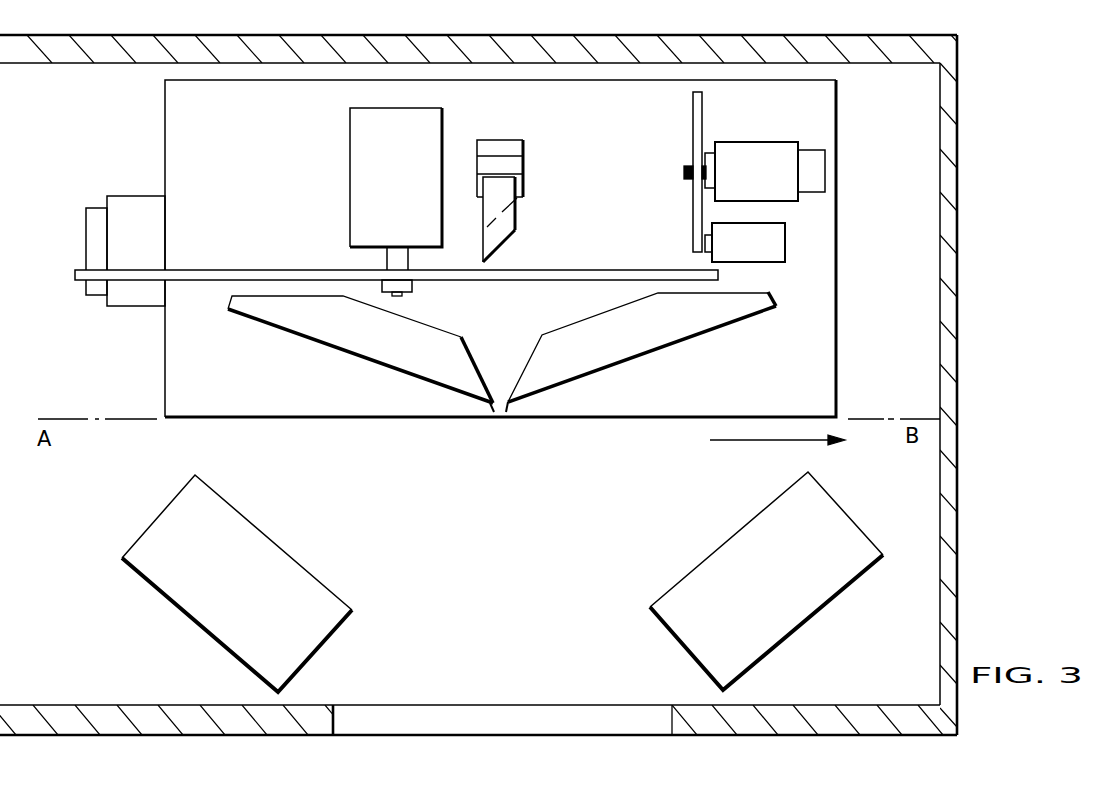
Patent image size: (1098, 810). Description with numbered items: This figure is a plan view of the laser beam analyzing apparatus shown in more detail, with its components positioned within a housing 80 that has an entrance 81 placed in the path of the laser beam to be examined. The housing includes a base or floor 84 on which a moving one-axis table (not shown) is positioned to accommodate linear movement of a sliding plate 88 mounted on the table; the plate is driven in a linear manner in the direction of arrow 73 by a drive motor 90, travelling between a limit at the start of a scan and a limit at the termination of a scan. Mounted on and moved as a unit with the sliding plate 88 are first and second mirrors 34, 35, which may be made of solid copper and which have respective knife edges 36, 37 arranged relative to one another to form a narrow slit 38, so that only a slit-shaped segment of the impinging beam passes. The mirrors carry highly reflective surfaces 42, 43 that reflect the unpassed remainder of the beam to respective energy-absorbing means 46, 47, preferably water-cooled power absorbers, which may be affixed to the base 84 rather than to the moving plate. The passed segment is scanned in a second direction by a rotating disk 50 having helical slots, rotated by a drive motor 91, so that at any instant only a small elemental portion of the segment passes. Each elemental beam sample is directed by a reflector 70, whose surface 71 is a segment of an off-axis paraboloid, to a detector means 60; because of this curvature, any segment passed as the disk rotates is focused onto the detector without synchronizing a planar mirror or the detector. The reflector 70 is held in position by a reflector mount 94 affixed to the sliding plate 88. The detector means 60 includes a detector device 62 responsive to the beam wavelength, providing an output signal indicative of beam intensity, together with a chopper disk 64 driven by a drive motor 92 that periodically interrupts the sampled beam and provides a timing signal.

The first mirror 34 is at (362, 334).
The second mirror 35 is at (622, 341).
The knife edge 36 is at (487, 417).
The knife edge 37 is at (512, 420).
The narrow slit 38 is at (500, 405).
The highly reflective surface 42 is at (341, 352).
The highly reflective surface 43 is at (724, 326).
The energy-absorbing means 46 is at (152, 591).
The energy-absorbing means 47 is at (832, 598).
The rotating disk 50 is at (177, 275).
The detector means 60 is at (672, 208).
The detector device 62 is at (777, 263).
The chopper disk 64 is at (693, 121).
The reflector 70 is at (490, 212).
The reflector surface 71 is at (502, 234).
The arrow 73 is at (722, 440).
The housing 80 is at (963, 300).
The entrance 81 is at (425, 712).
The base or floor 84 is at (920, 143).
The sliding plate 88 is at (175, 122).
The drive motor 90 is at (122, 298).
The drive motor 91 is at (355, 114).
The drive motor 92 is at (738, 148).
The reflector mount 94 is at (500, 143).